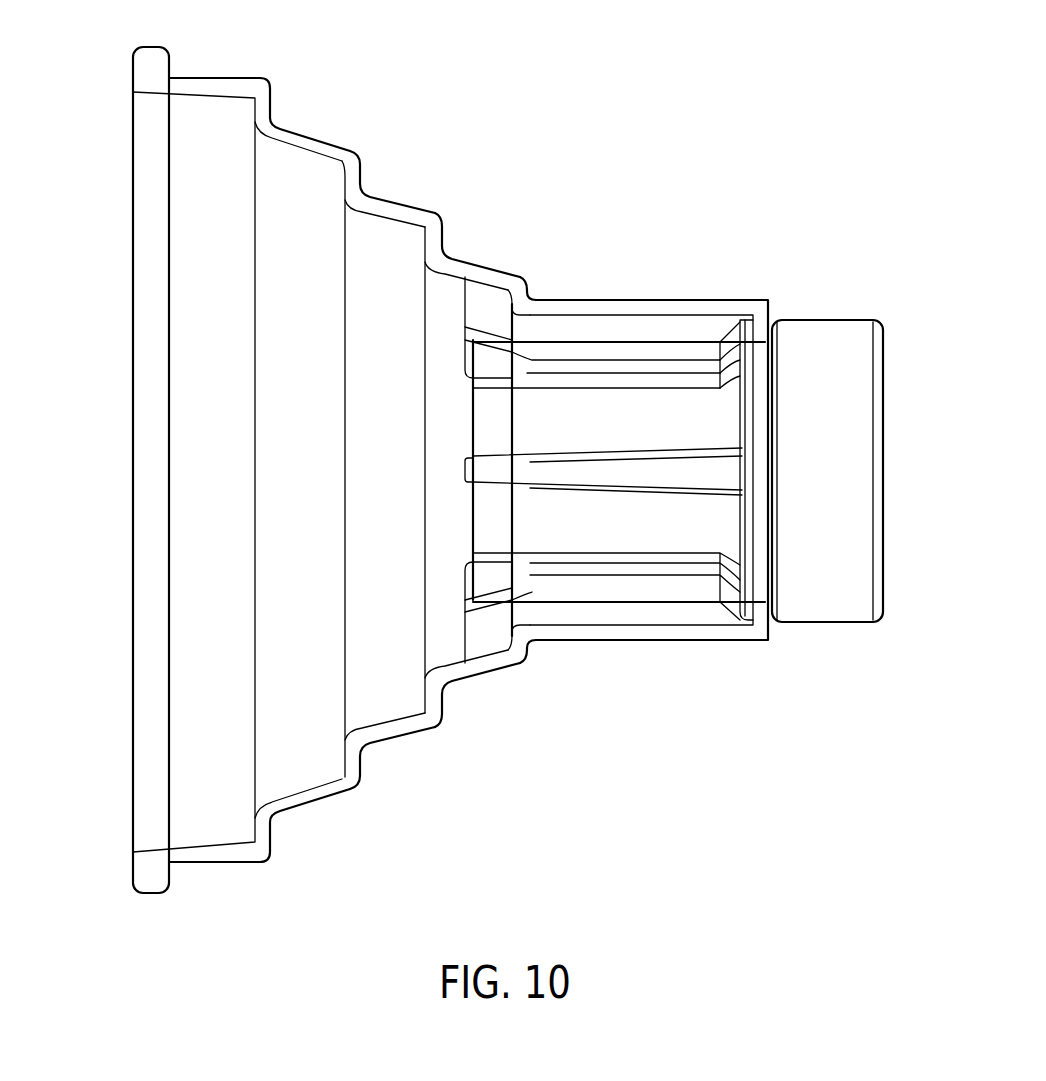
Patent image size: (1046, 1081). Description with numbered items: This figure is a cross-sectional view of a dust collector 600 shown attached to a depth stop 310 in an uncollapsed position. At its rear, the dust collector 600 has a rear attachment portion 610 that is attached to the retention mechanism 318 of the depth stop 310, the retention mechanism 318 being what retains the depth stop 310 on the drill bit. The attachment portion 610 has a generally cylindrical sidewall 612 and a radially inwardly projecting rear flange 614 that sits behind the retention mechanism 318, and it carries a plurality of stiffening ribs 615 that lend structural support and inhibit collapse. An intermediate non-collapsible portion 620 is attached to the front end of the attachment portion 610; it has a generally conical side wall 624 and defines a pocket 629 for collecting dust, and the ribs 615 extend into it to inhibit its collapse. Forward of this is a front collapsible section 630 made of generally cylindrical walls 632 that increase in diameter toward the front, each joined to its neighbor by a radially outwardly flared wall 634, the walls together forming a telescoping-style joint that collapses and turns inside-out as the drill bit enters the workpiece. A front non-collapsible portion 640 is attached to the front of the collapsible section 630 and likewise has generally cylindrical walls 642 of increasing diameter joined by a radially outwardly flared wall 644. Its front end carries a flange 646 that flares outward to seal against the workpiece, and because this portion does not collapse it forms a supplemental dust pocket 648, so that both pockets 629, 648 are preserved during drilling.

The dust collector 600 is at (536, 85).
The flange 646 is at (132, 63).
The supplemental dust pocket 648 is at (190, 802).
The generally cylindrical wall 642 is at (215, 79).
The radially outwardly flared wall 644 is at (270, 100).
The radially outwardly flared wall 634 is at (362, 164).
The generally cylindrical wall 632 is at (396, 200).
The intermediate non-collapsible portion 620 is at (530, 652).
The generally conical side wall 624 is at (512, 663).
The pocket 629 is at (505, 640).
The front collapsible section 630 is at (449, 687).
The front non-collapsible portion 640 is at (314, 809).
The rear attachment portion 610 is at (706, 641).
The generally cylindrical sidewall 612 is at (652, 641).
The rear flange 614 is at (768, 628).
The stiffening ribs 615 is at (650, 470).
The depth stop 310 is at (884, 349).
The retention mechanism 318 is at (824, 318).